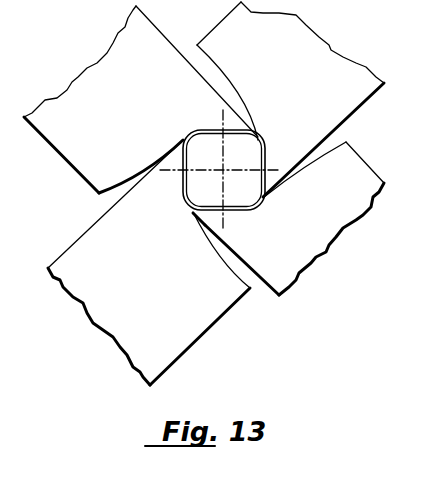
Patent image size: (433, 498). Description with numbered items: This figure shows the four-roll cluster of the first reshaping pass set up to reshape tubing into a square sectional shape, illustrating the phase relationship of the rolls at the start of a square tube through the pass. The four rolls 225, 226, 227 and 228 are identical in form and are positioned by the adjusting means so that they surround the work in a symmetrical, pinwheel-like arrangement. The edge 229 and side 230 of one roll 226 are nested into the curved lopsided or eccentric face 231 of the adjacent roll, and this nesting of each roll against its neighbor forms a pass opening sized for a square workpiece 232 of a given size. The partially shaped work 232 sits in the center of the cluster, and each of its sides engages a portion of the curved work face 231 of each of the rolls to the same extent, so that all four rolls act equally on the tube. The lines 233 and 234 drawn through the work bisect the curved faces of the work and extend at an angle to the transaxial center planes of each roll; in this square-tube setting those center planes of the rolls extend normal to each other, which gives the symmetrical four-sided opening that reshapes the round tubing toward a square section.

The roll 225 is at (313, 47).
The roll 226 is at (304, 255).
The roll 227 is at (185, 344).
The roll 228 is at (145, 28).
The edge 229 is at (193, 214).
The side 230 is at (238, 262).
The curved eccentric work face 231 is at (211, 241).
The square workpiece 232 is at (188, 158).
The bisecting line 233 is at (218, 118).
The bisecting line 234 is at (277, 163).